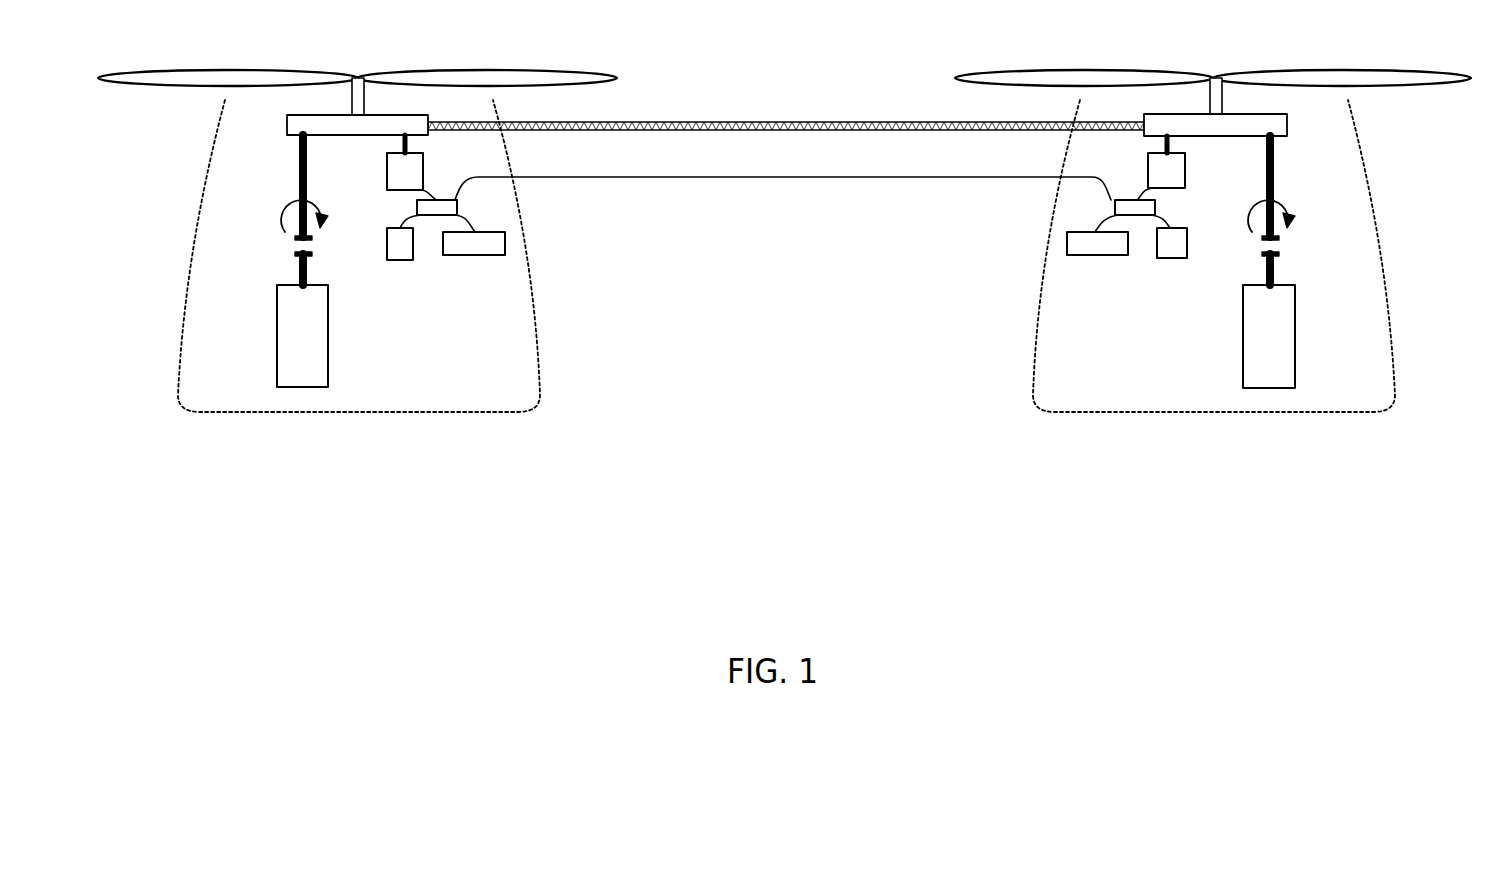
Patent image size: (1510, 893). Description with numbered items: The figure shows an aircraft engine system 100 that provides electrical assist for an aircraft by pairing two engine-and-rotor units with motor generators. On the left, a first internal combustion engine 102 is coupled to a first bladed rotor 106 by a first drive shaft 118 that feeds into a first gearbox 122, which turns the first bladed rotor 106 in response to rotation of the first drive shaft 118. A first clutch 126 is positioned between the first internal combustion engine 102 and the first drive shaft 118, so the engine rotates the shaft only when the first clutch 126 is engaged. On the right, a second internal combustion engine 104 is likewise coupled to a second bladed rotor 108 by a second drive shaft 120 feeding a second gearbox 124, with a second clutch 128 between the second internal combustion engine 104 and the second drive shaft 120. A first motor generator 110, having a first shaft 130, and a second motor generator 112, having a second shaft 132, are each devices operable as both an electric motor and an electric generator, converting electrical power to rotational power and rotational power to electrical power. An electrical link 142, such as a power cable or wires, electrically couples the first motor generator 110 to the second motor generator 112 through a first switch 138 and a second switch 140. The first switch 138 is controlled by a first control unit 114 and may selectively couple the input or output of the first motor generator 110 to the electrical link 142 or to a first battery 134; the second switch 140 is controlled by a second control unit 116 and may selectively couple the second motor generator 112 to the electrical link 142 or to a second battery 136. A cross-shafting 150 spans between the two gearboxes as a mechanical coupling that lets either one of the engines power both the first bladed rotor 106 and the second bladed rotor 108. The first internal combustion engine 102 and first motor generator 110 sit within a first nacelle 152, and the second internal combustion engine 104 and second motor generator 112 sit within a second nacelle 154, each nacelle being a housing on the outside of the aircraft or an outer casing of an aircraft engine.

The aircraft engine system 100 is at (985, 451).
The first internal combustion engine 102 is at (277, 310).
The second internal combustion engine 104 is at (1243, 315).
The first bladed rotor 106 is at (535, 75).
The second bladed rotor 108 is at (1068, 75).
The first motor generator 110 is at (387, 178).
The second motor generator 112 is at (1186, 178).
The first control unit 114 is at (387, 250).
The second control unit 116 is at (1187, 247).
The first drive shaft 118 is at (299, 158).
The second drive shaft 120 is at (1275, 165).
The first gearbox 122 is at (285, 128).
The second gearbox 124 is at (1287, 126).
The first clutch 126 is at (297, 244).
The second clutch 128 is at (1277, 245).
The first shaft 130 is at (387, 154).
The second shaft 132 is at (1185, 156).
The first battery 134 is at (463, 255).
The second battery 136 is at (1095, 255).
The first switch 138 is at (440, 200).
The second switch 140 is at (1122, 200).
The electrical link 142 is at (682, 178).
The cross-shafting 150 is at (735, 97).
The first nacelle 152 is at (197, 183).
The second nacelle 154 is at (1045, 220).